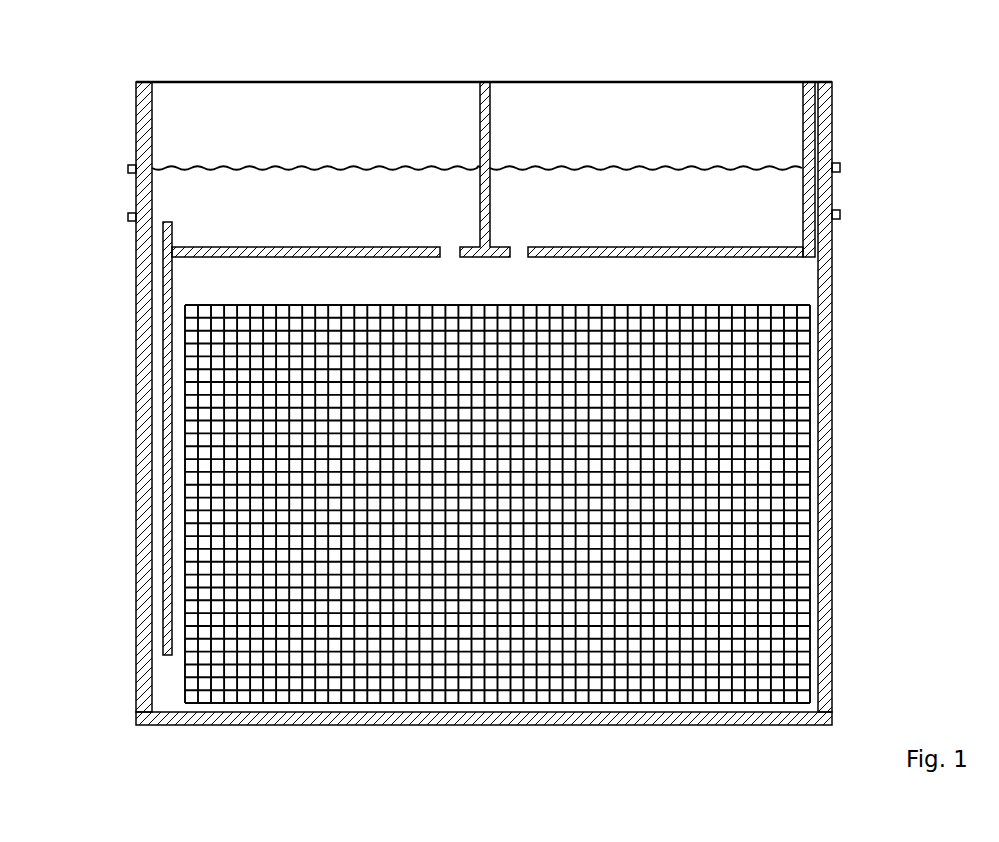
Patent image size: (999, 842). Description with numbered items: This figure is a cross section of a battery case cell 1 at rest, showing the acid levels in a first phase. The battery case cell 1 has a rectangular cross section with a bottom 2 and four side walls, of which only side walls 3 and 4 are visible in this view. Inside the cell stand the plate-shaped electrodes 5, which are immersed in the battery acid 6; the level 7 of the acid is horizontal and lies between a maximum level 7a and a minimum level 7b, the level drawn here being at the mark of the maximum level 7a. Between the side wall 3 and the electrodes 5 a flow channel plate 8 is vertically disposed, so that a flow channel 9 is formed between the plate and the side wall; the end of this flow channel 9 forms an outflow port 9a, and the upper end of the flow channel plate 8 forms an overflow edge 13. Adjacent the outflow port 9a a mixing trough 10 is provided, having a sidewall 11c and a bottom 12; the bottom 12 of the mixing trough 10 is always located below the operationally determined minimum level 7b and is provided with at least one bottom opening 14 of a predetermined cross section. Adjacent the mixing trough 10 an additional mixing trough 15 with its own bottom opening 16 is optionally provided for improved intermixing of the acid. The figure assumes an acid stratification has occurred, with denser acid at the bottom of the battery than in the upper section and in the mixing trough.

The battery case cell 1 is at (876, 412).
The bottom 2 is at (185, 727).
The side wall 3 is at (140, 603).
The side wall 4 is at (832, 557).
The plate-shaped electrodes 5 is at (220, 442).
The battery acid 6 is at (218, 276).
The level 7 is at (190, 160).
The maximum level 7a is at (840, 167).
The minimum level 7b is at (840, 213).
The flow channel plate 8 is at (163, 360).
The flow channel 9 is at (160, 502).
The outflow port 9a is at (157, 210).
The mixing trough 10 is at (335, 207).
The sidewall 11c is at (479, 112).
The bottom 12 is at (256, 247).
The overflow edge 13 is at (183, 213).
The bottom opening 14 is at (450, 248).
The additional mixing trough 15 is at (655, 207).
The bottom opening 16 is at (520, 248).